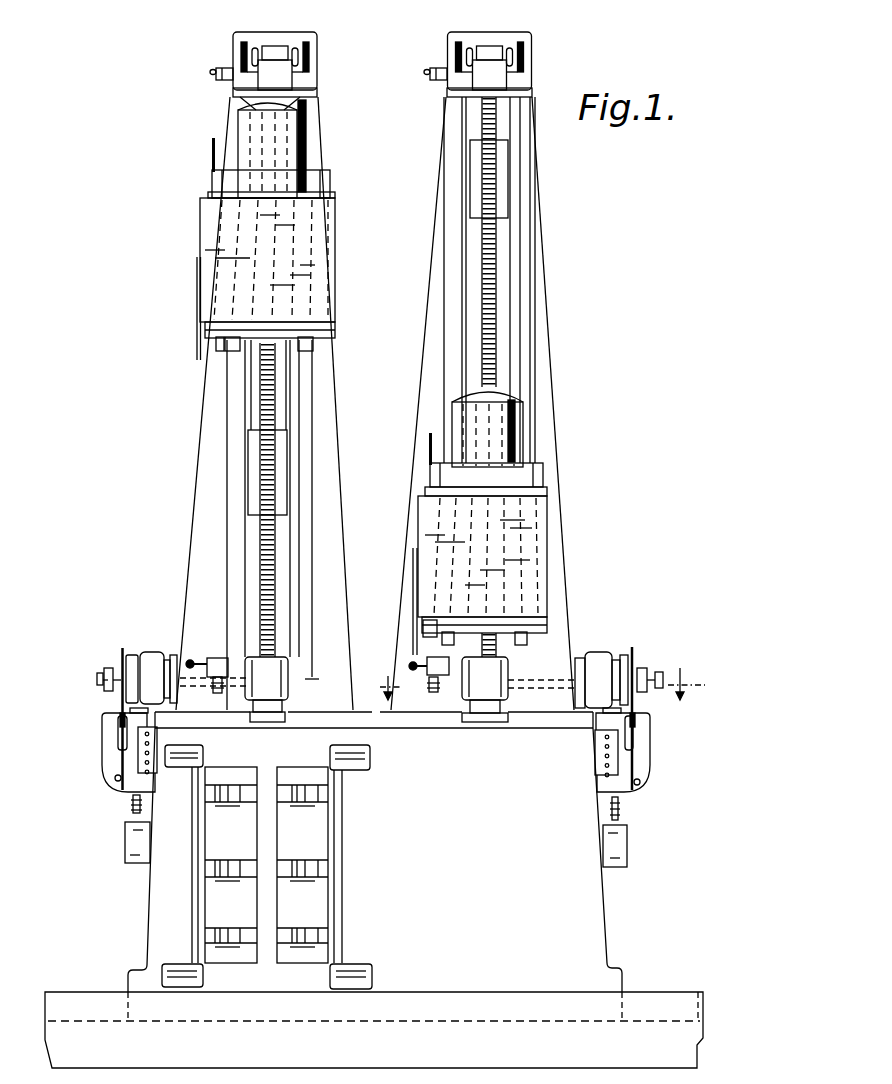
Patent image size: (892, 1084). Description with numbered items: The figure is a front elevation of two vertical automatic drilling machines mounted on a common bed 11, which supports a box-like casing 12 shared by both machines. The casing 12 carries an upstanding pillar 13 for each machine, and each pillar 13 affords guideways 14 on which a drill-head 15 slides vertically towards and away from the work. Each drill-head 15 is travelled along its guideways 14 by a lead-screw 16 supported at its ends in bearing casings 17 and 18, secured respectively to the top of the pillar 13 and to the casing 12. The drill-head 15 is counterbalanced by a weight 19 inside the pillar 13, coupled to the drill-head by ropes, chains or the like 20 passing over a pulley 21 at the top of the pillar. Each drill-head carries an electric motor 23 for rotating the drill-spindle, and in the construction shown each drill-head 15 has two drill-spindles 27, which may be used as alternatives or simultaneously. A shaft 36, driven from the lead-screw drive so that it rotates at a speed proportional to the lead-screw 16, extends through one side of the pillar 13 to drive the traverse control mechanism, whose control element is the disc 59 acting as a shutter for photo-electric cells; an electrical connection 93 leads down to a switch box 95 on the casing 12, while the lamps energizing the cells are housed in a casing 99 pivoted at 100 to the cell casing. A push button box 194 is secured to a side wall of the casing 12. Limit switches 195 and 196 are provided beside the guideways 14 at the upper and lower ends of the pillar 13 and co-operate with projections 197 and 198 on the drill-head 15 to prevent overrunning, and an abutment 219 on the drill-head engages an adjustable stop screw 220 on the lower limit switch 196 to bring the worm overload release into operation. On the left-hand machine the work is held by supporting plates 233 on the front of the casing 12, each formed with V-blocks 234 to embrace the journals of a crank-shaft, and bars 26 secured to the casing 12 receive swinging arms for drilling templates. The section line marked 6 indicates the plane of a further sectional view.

The section line 6- 6 is at (538, 677).
The bed 11 is at (93, 1003).
The box-like casing 12 is at (587, 911).
The pillar 13 is at (335, 440).
The guideways 14 is at (238, 518).
The drill-head 15 is at (330, 262).
The lead-screw 16 is at (260, 485).
The bearing casing 17 is at (318, 92).
The bearing casing 18 is at (280, 693).
The weight 19 is at (248, 460).
The ropes, chains or the like 20 is at (250, 390).
The pulley 21 is at (258, 36).
The electric motor 23 is at (306, 142).
The bars 26 is at (190, 900).
The drill-spindles 27 is at (314, 346).
The shaft 36 is at (520, 690).
The disc 59 is at (122, 647).
The electrical connection 93 is at (133, 808).
The switch box 95 is at (125, 845).
The casing 99 is at (106, 733).
The pivot 100 is at (115, 779).
The push button box 194 is at (138, 758).
The limit switch 195 is at (212, 75).
The limit switch 196 is at (189, 661).
The projection 197 is at (212, 148).
The projection 198 is at (197, 350).
The abutment 219 is at (218, 342).
The adjustable stop screw 220 is at (216, 694).
The supporting plates 233 is at (283, 844).
The V-blocks 234 is at (236, 793).